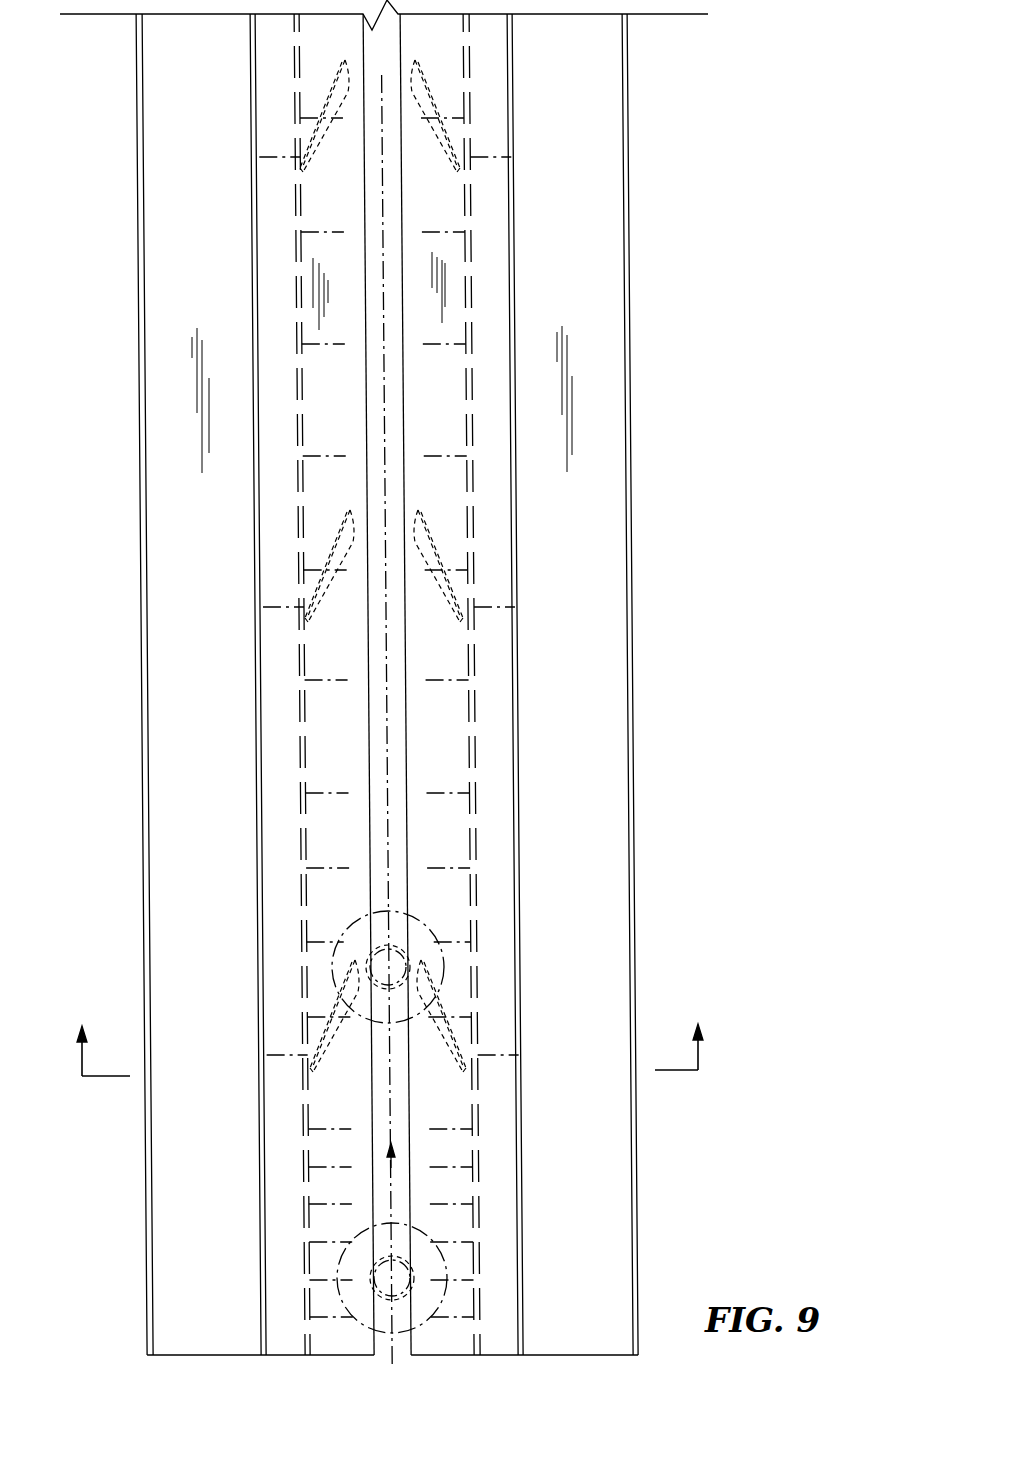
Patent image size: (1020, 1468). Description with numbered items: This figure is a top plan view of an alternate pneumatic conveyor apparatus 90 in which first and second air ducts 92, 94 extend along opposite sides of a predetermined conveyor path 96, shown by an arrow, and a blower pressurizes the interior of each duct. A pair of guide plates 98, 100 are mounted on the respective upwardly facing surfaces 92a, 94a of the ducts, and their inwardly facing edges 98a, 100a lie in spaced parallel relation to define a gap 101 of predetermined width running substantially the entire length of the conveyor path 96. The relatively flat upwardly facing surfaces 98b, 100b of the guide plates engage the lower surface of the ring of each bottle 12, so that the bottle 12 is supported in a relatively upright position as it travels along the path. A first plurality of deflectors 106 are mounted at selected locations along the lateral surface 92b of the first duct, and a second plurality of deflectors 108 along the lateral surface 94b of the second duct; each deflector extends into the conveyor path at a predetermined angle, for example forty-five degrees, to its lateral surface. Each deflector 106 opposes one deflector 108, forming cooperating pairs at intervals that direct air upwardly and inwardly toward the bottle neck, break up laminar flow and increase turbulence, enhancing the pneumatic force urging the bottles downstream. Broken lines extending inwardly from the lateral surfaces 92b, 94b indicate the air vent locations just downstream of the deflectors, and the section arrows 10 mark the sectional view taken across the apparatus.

The pneumatic conveyor apparatus 90 is at (723, 1115).
The first air duct 92 is at (142, 845).
The upwardly facing surface of first duct 92a is at (233, 889).
The lateral surface of first duct 92b is at (303, 762).
The second air duct 94 is at (635, 850).
The upwardly facing surface of second duct 94a is at (602, 878).
The lateral surface of second duct 94b is at (470, 762).
The conveyor path 96 is at (396, 1152).
The first guide plate 98 is at (260, 1228).
The inwardly facing edge of first guide plate 98a is at (372, 1086).
The upwardly facing surface of first guide plate 98b is at (282, 1138).
The second guide plate 100 is at (525, 1250).
The inwardly facing edge of second guide plate 100a is at (407, 1065).
The upwardly facing surface of second guide plate 100b is at (498, 1186).
The gap 101 is at (392, 1193).
The first deflectors 106 is at (323, 126).
The second deflectors 108 is at (437, 126).
The bottle 12 is at (404, 912).
The section line 10- 10 is at (394, 1035).